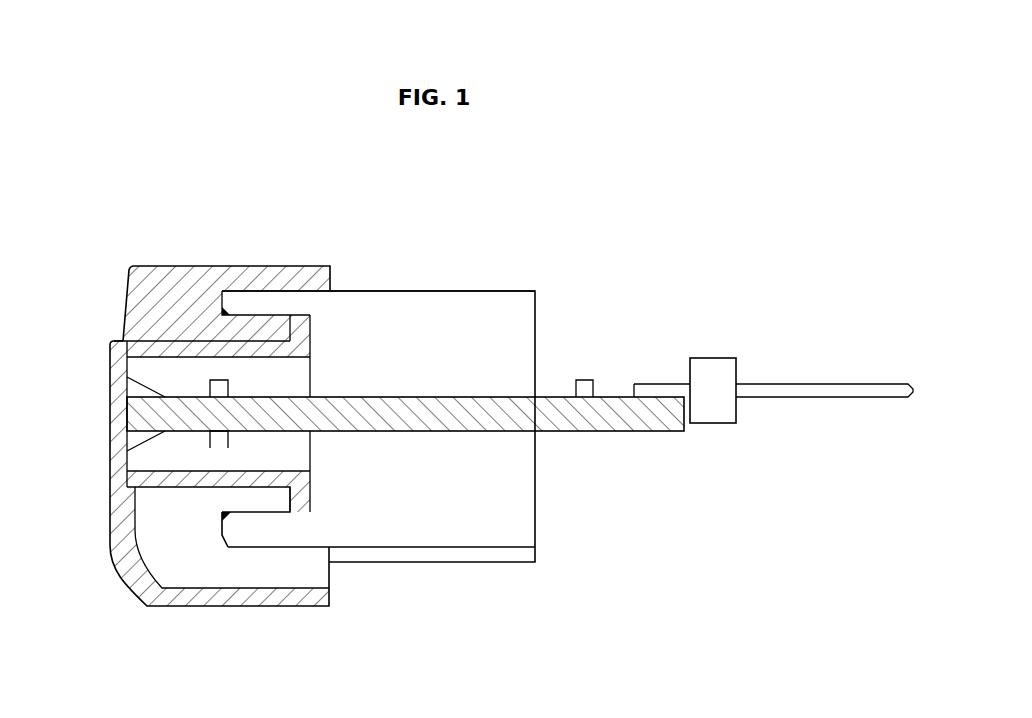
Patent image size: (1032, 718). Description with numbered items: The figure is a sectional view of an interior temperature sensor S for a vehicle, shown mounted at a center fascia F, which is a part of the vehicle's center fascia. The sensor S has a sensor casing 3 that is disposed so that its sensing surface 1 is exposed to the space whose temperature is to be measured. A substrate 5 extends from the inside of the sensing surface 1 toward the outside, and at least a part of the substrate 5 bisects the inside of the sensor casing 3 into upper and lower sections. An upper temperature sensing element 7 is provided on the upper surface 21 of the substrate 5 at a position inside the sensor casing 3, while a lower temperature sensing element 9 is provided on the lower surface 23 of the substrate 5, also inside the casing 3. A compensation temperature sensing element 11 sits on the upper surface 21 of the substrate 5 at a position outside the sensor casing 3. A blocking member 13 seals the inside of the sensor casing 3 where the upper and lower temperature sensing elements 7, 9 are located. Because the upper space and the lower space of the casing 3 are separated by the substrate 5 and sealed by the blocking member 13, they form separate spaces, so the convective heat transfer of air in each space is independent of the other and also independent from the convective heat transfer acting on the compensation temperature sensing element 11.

The sensing surface 1 is at (110, 417).
The center fascia F is at (168, 266).
The interior temperature sensor S is at (432, 290).
The sensor casing 3 is at (177, 487).
The substrate 5 is at (487, 432).
The upper temperature sensing element 7 is at (218, 380).
The lower temperature sensing element 9 is at (220, 452).
The compensation temperature sensing element 11 is at (583, 385).
The blocking member 13 is at (498, 298).
The upper surface 21 is at (300, 397).
The lower surface 23 is at (292, 432).